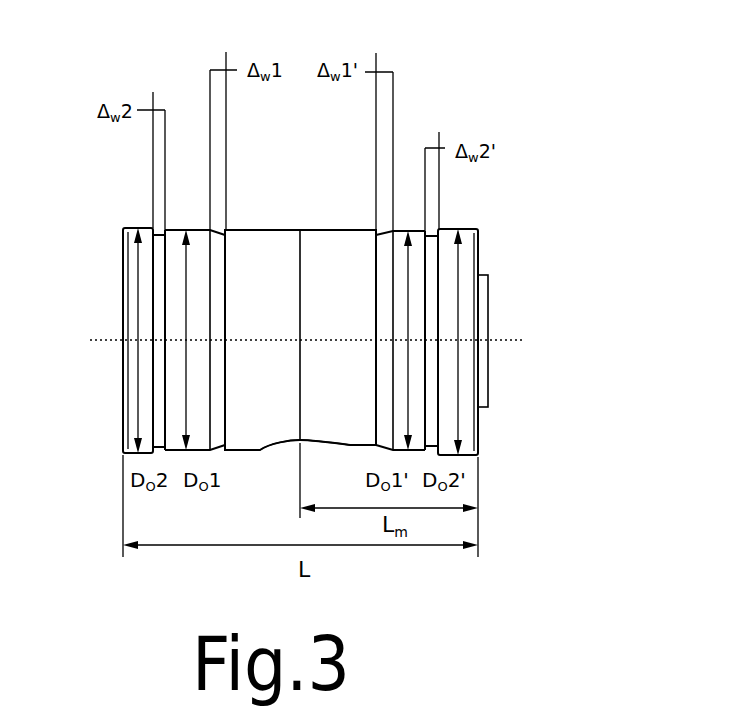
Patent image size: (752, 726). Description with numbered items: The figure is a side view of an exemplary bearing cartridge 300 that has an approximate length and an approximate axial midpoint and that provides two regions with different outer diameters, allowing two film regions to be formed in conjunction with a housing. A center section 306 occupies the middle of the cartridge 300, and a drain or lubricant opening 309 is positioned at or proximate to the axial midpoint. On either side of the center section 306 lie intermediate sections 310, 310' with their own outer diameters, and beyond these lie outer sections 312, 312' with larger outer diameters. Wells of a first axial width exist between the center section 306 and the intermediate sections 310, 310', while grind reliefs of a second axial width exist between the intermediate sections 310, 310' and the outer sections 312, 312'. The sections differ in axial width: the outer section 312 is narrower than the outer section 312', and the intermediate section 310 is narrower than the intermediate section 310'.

The cartridge 300 is at (146, 66).
The center section 306 is at (287, 389).
The drain or lubricant opening 309 is at (300, 445).
The intermediate section 310 is at (230, 309).
The intermediate section 310' is at (365, 320).
The outer section 312 is at (99, 338).
The outer section 312' is at (500, 338).